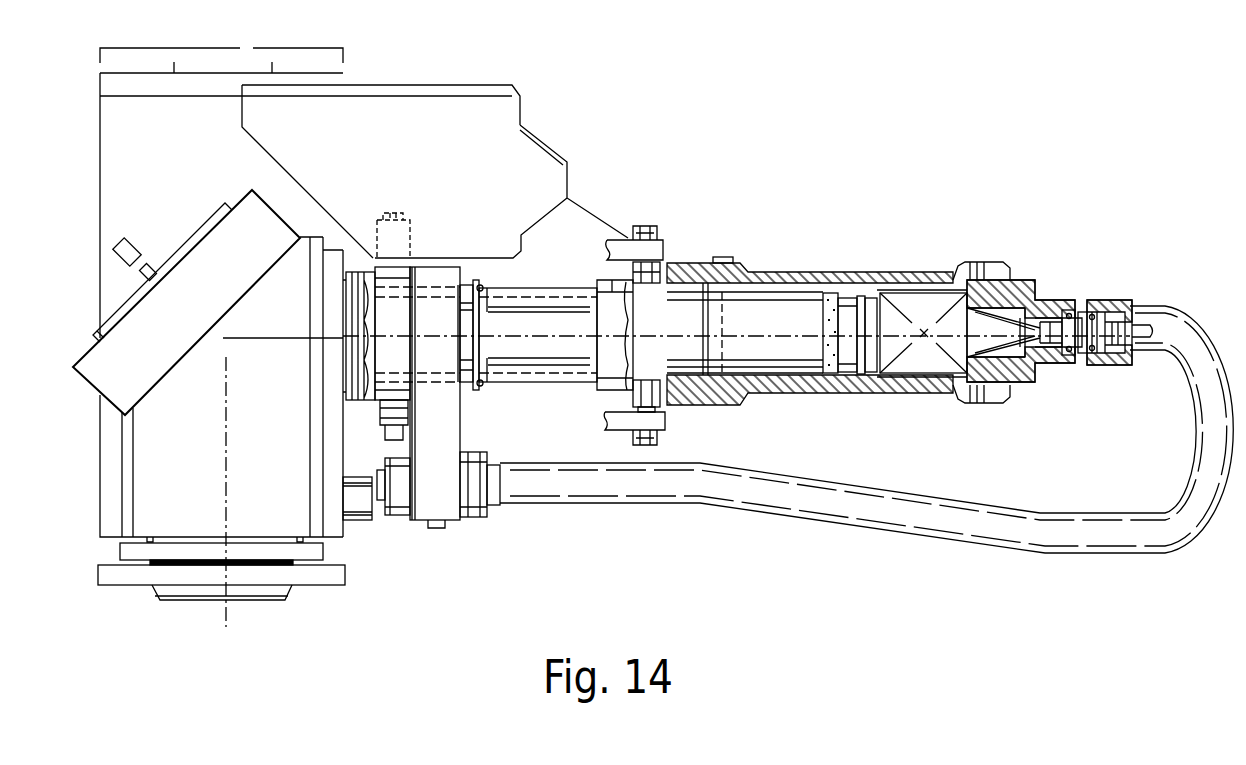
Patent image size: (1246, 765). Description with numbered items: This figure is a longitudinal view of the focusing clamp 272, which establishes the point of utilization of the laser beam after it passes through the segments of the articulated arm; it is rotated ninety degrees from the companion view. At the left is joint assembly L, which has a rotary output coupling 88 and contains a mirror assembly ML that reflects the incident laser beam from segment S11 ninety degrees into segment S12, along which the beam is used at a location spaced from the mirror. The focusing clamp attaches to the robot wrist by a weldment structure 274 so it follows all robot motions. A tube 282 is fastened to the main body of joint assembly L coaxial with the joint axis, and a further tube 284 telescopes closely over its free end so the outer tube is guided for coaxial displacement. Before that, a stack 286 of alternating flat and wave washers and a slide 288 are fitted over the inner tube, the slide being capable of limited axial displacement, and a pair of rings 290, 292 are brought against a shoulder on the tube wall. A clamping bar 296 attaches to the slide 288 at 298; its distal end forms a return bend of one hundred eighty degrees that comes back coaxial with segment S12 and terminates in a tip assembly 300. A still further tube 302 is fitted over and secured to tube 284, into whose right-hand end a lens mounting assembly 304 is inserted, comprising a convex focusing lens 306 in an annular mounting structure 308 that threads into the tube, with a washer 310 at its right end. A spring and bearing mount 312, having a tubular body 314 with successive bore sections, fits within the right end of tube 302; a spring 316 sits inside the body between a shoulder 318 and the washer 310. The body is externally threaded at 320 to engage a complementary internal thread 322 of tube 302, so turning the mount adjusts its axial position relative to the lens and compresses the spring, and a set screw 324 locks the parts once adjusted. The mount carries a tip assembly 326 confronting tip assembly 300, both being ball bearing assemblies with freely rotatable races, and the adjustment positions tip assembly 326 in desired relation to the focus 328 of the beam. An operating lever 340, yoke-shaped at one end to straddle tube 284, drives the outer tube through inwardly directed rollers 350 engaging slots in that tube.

The focusing clamp 272 is at (862, 212).
The weldment structure 274 is at (457, 85).
The tube 282 is at (540, 392).
The further tube 284 is at (600, 270).
The stack of alternating flat and wave washers 286 is at (355, 262).
The slide 288 is at (437, 490).
The ring 290 is at (482, 390).
The ring 292 is at (481, 286).
The clamping bar 296 is at (1033, 532).
The attachment of clamping bar to slide 298 is at (488, 513).
The tip assembly 300 is at (1133, 300).
The still further tube 302 is at (912, 290).
The lens mounting assembly 304 is at (842, 275).
The convex focusing lens 306 is at (823, 327).
The mounting structure 308 is at (857, 375).
The washer 310 is at (880, 290).
The spring and bearing mount 312 is at (1018, 290).
The body 314 is at (1070, 300).
The spring 316 is at (950, 270).
The shoulder 318 is at (943, 397).
The thread 320 is at (1010, 283).
The complementary thread 322 is at (996, 396).
The set screw 324 is at (985, 265).
The tip assembly 326 is at (1068, 363).
The focus 328 is at (1085, 302).
The operating lever 340 is at (625, 245).
The rollers 350 is at (662, 265).
The rotary output coupling 88 is at (310, 575).
The joint assembly L is at (133, 485).
The mirror assembly ML is at (132, 300).
The beam path segment S11 is at (227, 465).
The beam path segment S12 is at (243, 338).